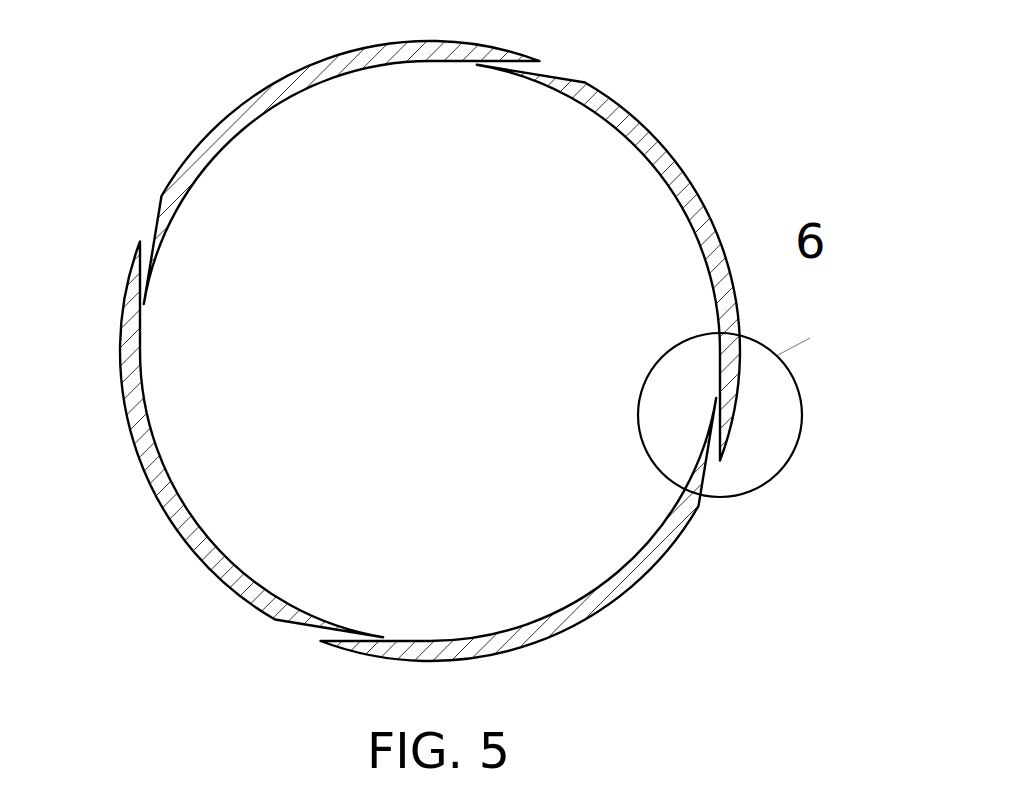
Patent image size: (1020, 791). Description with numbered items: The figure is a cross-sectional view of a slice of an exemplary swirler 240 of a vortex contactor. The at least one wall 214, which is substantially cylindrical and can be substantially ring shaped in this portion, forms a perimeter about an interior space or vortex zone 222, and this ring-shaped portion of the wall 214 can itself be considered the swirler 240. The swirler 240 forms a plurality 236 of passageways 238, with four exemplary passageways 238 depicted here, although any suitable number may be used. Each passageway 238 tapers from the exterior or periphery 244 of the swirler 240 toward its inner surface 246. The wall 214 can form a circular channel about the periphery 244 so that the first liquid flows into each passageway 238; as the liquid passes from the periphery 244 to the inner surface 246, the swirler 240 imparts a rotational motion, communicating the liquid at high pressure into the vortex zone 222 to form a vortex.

The wall 214 is at (230, 128).
The vortex zone 222 is at (455, 340).
The plurality of passageways 236 is at (510, 395).
The passageway 238 is at (532, 68).
The swirler 240 is at (130, 417).
The periphery 244 is at (122, 377).
The inner surface 246 is at (706, 430).